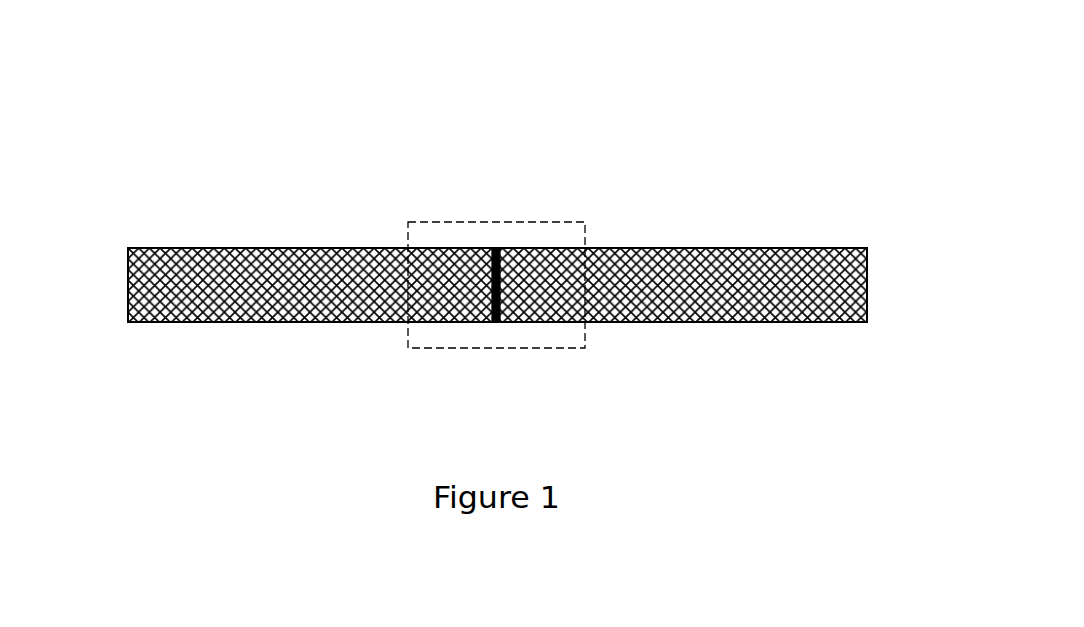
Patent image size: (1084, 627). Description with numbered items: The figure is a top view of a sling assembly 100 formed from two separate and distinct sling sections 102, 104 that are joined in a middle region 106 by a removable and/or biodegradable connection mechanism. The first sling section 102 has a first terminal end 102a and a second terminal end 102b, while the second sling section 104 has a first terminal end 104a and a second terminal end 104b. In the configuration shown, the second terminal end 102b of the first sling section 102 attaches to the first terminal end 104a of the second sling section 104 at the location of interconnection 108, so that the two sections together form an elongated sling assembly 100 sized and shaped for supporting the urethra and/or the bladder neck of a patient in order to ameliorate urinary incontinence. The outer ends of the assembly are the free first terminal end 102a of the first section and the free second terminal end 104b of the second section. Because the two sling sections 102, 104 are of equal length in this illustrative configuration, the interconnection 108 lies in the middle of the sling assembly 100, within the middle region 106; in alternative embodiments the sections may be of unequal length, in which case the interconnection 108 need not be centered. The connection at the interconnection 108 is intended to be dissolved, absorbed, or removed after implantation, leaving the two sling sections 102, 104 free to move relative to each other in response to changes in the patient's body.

The sling assembly 100 is at (797, 87).
The sling section 102 is at (268, 248).
The first terminal end 102a is at (128, 311).
The second terminal end 102b is at (490, 262).
The sling section 104 is at (740, 322).
The first terminal end 104a is at (504, 258).
The second terminal end 104b is at (867, 312).
The middle region 106 is at (585, 348).
The interconnection 108 is at (491, 321).